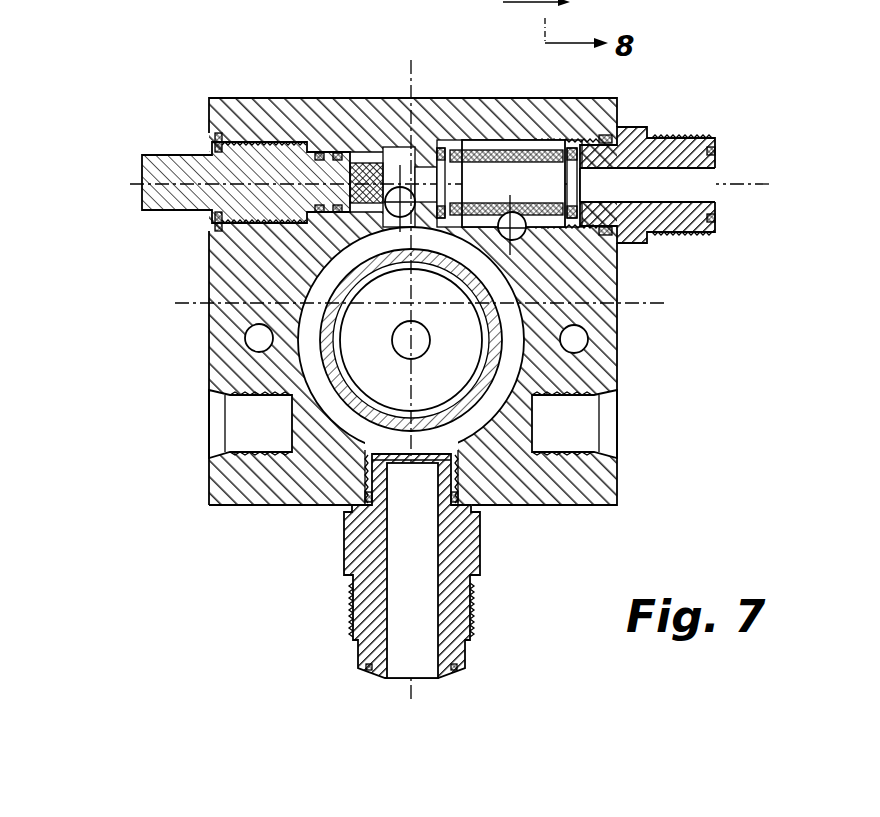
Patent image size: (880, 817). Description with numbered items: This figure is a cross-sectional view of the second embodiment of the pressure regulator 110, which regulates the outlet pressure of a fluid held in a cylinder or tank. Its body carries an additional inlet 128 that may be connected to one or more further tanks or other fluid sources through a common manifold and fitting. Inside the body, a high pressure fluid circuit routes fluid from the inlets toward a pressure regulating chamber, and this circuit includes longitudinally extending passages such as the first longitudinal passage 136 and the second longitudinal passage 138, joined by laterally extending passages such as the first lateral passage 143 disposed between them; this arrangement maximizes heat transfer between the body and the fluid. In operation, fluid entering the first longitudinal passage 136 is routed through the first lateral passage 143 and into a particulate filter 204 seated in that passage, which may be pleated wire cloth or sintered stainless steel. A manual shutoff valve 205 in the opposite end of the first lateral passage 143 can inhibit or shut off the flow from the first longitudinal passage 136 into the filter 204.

The pressure regulator 110 is at (158, 78).
The additional inlet 128 is at (588, 151).
The first longitudinal passage 136 is at (352, 163).
The second longitudinal passage 138 is at (517, 240).
The first lateral passage 143 is at (478, 144).
The particulate filter 204 is at (518, 144).
The manual shutoff valve 205 is at (162, 212).